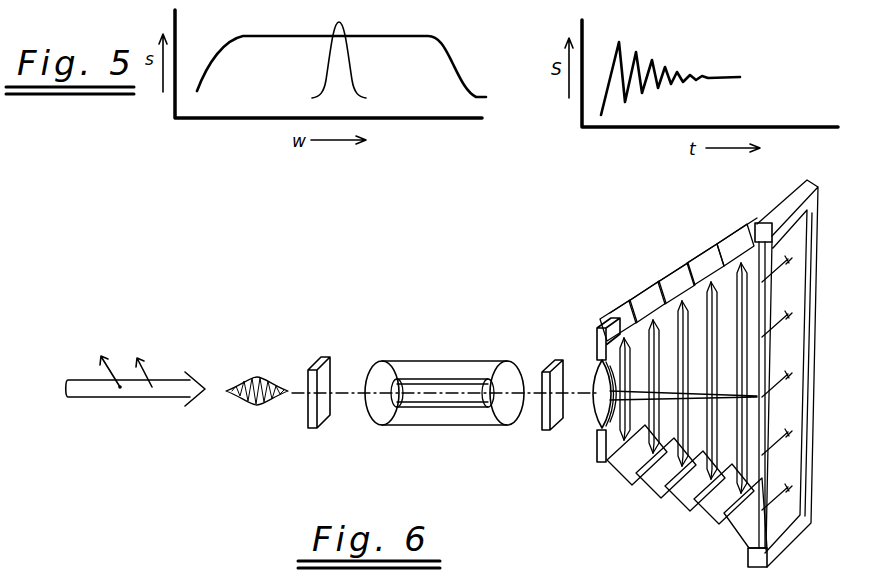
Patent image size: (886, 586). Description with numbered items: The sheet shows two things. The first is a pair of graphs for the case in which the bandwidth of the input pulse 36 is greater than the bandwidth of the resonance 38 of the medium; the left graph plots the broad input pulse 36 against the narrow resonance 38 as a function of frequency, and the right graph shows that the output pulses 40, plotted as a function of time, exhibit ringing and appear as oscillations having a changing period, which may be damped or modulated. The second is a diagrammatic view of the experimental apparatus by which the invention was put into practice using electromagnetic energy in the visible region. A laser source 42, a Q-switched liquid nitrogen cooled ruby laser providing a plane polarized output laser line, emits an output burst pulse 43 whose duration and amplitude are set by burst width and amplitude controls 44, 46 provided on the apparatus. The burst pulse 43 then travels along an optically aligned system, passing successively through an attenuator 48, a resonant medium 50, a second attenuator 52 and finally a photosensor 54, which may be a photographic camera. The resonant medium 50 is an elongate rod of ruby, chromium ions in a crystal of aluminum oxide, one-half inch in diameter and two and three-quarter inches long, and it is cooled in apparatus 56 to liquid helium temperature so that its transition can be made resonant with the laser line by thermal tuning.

In FIG. 5, the input pulse 36 is at (454, 62).
In FIG. 5, the resonance 38 is at (322, 66).
In FIG. 5, the output pulses 40 is at (680, 76).
In FIG. 6, the laser source 42 is at (73, 380).
In FIG. 6, the burst width control 44 is at (149, 369).
In FIG. 6, the amplitude control 46 is at (112, 370).
In FIG. 6, the output burst pulse 43 is at (256, 378).
In FIG. 6, the attenuator 48 is at (313, 370).
In FIG. 6, the resonant medium 50 is at (460, 381).
In FIG. 6, the attenuator 52 is at (546, 372).
In FIG. 6, the photosensor 54 is at (685, 268).
In FIG. 6, the cooling apparatus 56 is at (418, 359).